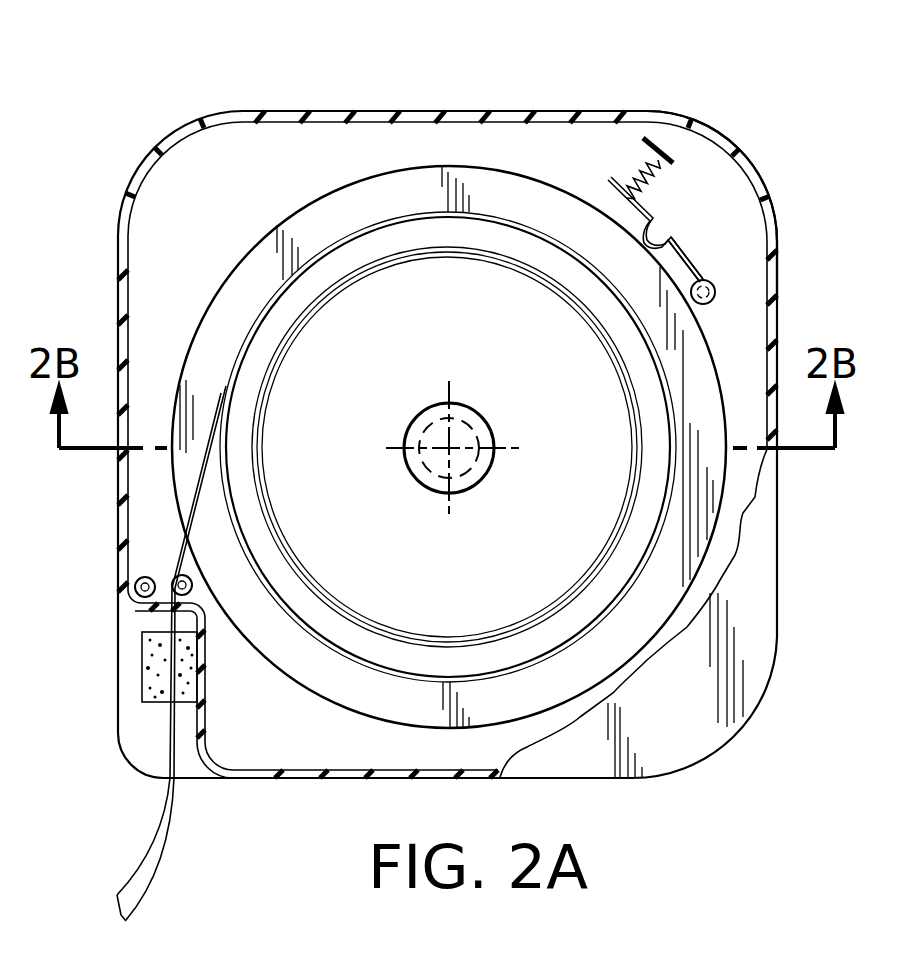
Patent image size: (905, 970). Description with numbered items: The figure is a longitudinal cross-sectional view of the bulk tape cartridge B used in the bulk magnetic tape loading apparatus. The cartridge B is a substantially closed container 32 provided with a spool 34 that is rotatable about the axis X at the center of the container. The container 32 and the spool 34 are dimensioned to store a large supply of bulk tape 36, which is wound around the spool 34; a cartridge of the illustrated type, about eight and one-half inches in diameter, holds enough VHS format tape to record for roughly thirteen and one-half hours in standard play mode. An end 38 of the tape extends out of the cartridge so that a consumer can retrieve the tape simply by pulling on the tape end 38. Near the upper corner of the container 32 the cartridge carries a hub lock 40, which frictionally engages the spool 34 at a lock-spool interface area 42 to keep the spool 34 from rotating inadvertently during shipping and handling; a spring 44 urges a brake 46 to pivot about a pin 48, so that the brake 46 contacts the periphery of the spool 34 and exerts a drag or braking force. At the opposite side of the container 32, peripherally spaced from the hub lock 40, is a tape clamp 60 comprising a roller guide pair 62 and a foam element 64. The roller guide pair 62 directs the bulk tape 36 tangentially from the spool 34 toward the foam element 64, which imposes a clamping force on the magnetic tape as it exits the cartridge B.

The cartridge B is at (422, 100).
The container 32 is at (150, 172).
The spool 34 is at (688, 528).
The bulk tape 36 is at (364, 598).
The end of the tape 38 is at (158, 852).
The hub lock 40 is at (680, 120).
The lock-spool interface area 42 is at (650, 236).
The spring 44 is at (633, 164).
The brake 46 is at (688, 253).
The pin 48 is at (712, 284).
The tape clamp 60 is at (120, 663).
The roller guide pair 62 is at (174, 576).
The foam element 64 is at (153, 658).
The axis X is at (449, 448).